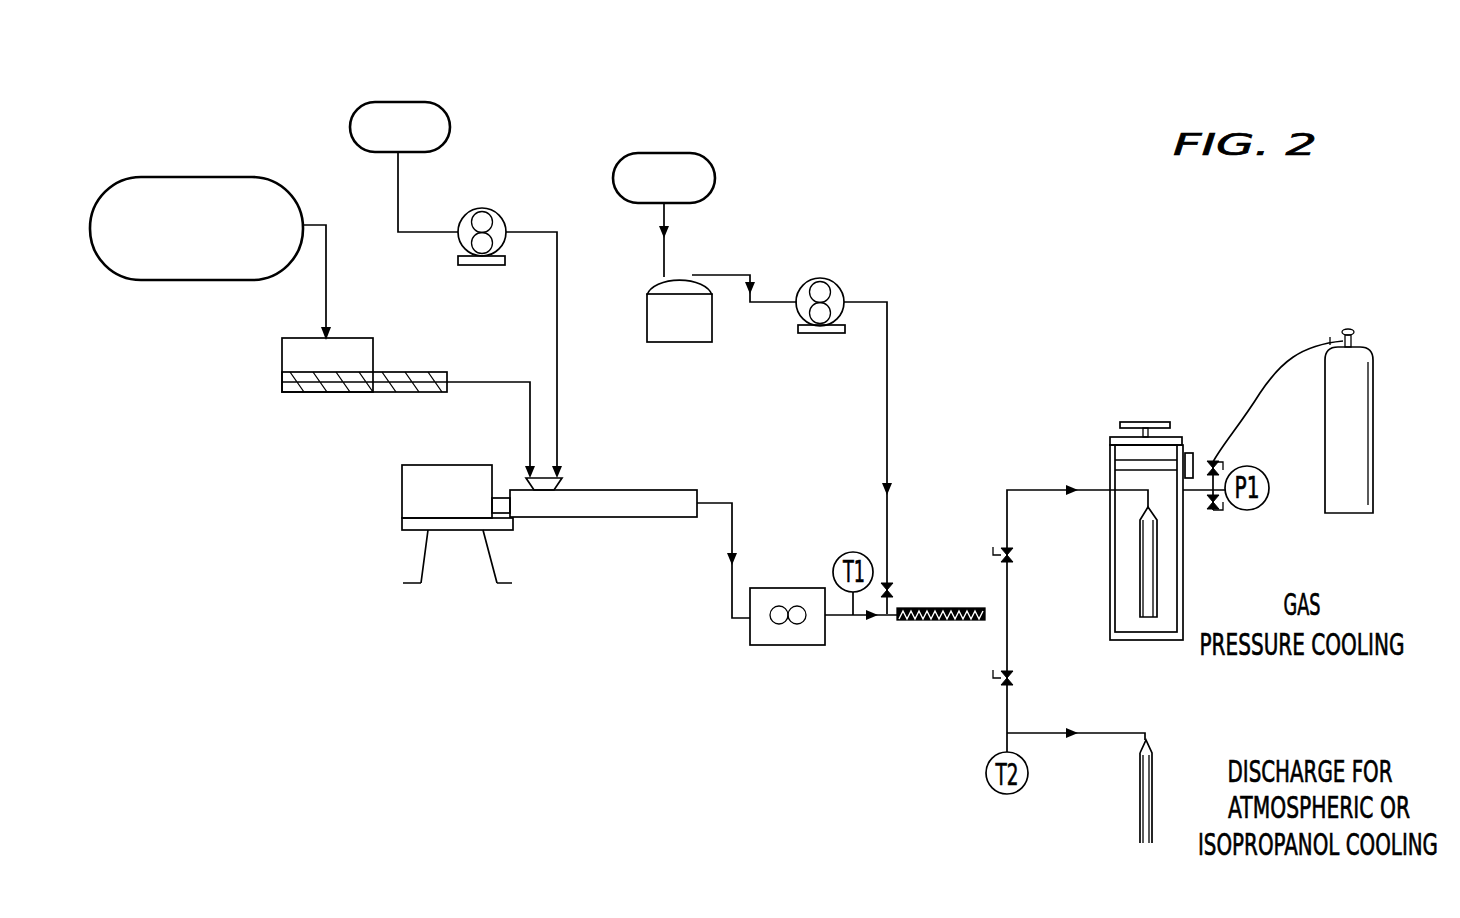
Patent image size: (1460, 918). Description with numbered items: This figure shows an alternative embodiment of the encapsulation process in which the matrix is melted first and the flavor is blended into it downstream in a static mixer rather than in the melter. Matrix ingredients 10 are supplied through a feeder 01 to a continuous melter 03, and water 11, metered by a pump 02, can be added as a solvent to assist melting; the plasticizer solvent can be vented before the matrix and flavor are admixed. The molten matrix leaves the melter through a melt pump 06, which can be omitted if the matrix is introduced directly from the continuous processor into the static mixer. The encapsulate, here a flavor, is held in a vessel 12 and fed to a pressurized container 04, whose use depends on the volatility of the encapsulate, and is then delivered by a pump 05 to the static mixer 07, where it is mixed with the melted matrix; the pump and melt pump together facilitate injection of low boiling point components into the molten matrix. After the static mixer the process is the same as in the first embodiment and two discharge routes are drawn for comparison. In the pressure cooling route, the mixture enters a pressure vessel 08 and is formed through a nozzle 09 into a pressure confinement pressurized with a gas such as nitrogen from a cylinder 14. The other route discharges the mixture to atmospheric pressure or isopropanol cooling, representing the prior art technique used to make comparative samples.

The matrix ingredients 10 is at (303, 213).
The water 11 is at (437, 103).
The vessel 12 is at (714, 170).
The nitrogen gas cylinder 14 is at (1365, 410).
The feeder 01 is at (364, 406).
The pump 02 is at (481, 281).
The continuous melter 03 is at (546, 587).
The pressurized container 04 is at (678, 371).
The pump 05 is at (820, 349).
The melt pump 06 is at (787, 679).
The static mixer 07 is at (941, 678).
The pressure vessel 08 is at (1079, 494).
The nozzle 09 is at (1142, 502).